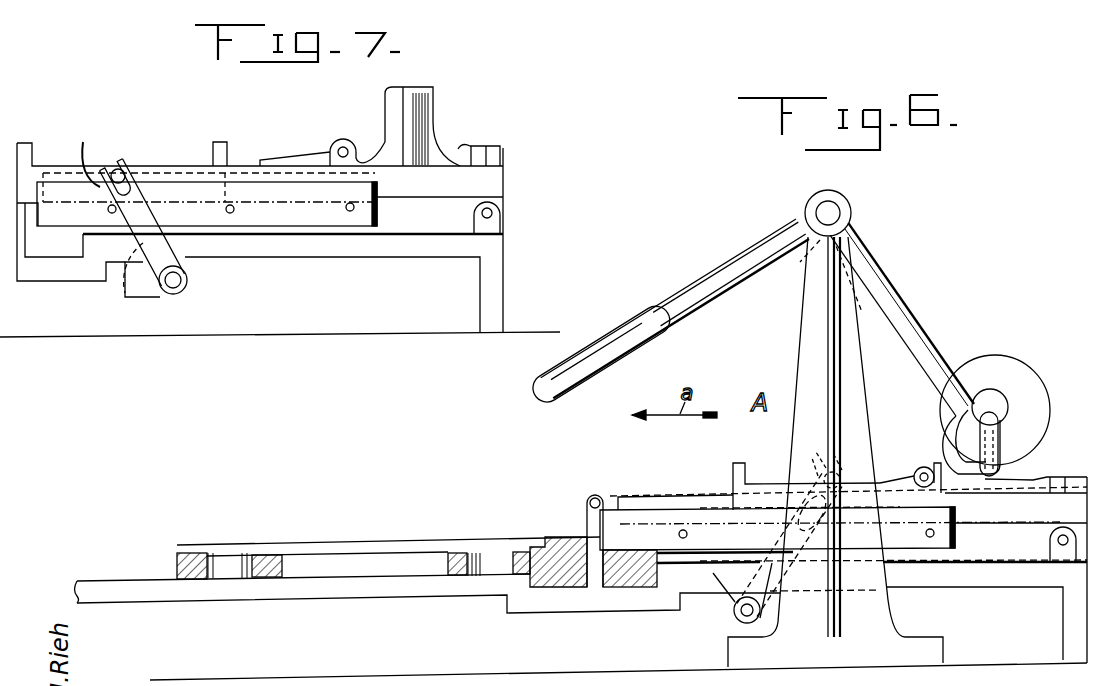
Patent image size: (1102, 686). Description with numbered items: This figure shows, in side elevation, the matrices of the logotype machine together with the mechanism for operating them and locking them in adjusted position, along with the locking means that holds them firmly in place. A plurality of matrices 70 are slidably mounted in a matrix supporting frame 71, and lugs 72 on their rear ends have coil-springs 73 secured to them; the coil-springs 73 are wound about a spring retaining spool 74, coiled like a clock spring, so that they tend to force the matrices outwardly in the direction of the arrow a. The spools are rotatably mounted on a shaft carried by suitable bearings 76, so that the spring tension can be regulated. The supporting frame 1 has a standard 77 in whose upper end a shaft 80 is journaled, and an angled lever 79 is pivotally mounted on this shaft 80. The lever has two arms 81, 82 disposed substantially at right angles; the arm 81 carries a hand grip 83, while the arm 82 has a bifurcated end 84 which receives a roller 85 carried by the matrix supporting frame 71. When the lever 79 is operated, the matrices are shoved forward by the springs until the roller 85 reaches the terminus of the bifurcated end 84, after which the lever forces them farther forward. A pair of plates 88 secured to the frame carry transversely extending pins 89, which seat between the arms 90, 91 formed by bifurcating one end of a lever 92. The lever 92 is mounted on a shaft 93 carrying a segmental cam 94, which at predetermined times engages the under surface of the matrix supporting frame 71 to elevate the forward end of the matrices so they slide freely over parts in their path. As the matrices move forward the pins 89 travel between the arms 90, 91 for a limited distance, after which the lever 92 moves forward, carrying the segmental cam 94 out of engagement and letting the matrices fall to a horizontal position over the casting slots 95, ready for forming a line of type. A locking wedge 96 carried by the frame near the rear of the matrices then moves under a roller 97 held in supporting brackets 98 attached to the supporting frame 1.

In FIG. 6, the supporting frame 1 is at (545, 585).
In FIG. 6, the matrices 70 is at (680, 497).
In FIG. 7, the matrix supporting frame 71 is at (420, 220).
In FIG. 6, the matrix supporting frame 71 is at (612, 510).
In FIG. 6, the lugs 72 is at (1075, 483).
In FIG. 6, the coil-springs 73 is at (1040, 472).
In FIG. 6, the spring retaining spool 74 is at (997, 375).
In FIG. 7, the bearings 76 is at (418, 117).
In FIG. 6, the bearings 76 is at (1000, 407).
In FIG. 6, the standard 77 is at (842, 357).
In FIG. 6, the angled lever 79 is at (713, 273).
In FIG. 6, the shaft 80 is at (826, 220).
In FIG. 6, the arm 81 is at (758, 245).
In FIG. 6, the arm 82 is at (923, 338).
In FIG. 6, the hand grip 83 is at (618, 345).
In FIG. 6, the bifurcated end 84 is at (1033, 428).
In FIG. 6, the roller 85 is at (1000, 482).
In FIG. 7, the plates 88 is at (213, 164).
In FIG. 6, the plates 88 is at (748, 486).
In FIG. 7, the pins 89 is at (110, 167).
In FIG. 6, the pins 89 is at (843, 457).
In FIG. 7, the arm 90 is at (128, 170).
In FIG. 6, the arm 90 is at (850, 512).
In FIG. 7, the arm 91 is at (83, 151).
In FIG. 6, the arm 91 is at (807, 463).
In FIG. 7, the lever 92 is at (178, 262).
In FIG. 6, the lever 92 is at (789, 544).
In FIG. 7, the shaft 93 is at (173, 283).
In FIG. 6, the shaft 93 is at (747, 613).
In FIG. 7, the segmental cam 94 is at (143, 284).
In FIG. 6, the segmental cam 94 is at (727, 603).
In FIG. 6, the casting slots 95 is at (592, 585).
In FIG. 7, the locking wedge 96 is at (288, 163).
In FIG. 6, the locking wedge 96 is at (897, 478).
In FIG. 6, the roller 97 is at (588, 495).
In FIG. 6, the supporting brackets 98 is at (560, 515).